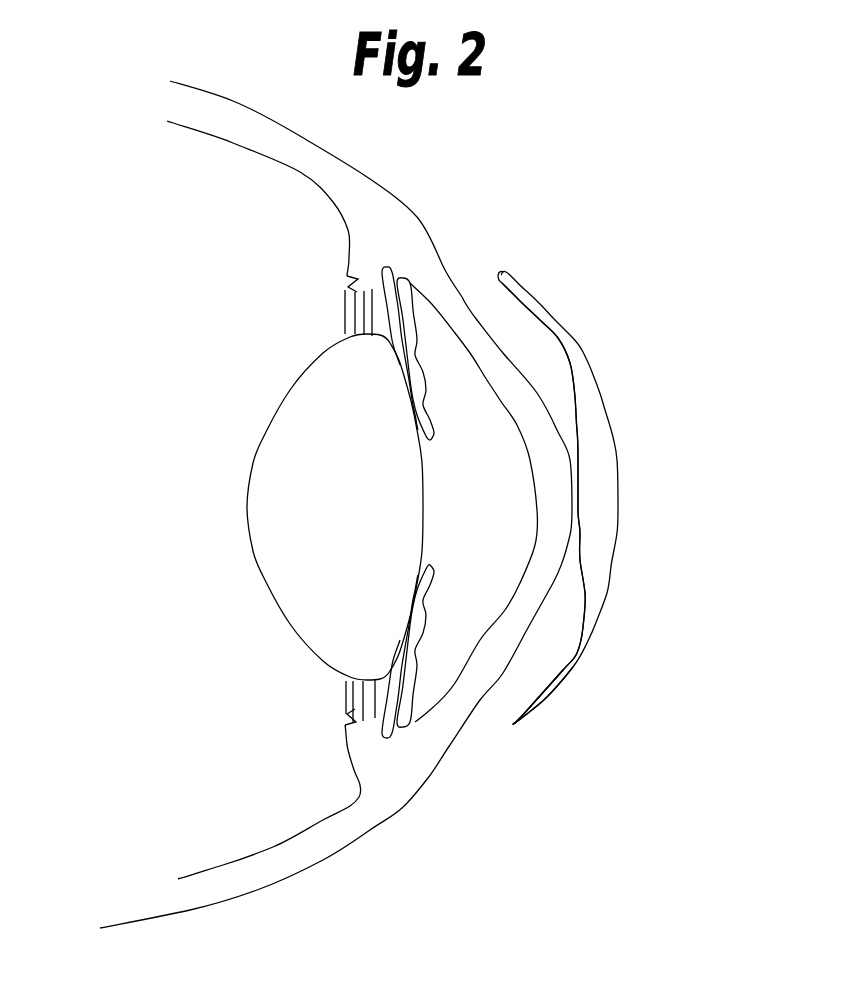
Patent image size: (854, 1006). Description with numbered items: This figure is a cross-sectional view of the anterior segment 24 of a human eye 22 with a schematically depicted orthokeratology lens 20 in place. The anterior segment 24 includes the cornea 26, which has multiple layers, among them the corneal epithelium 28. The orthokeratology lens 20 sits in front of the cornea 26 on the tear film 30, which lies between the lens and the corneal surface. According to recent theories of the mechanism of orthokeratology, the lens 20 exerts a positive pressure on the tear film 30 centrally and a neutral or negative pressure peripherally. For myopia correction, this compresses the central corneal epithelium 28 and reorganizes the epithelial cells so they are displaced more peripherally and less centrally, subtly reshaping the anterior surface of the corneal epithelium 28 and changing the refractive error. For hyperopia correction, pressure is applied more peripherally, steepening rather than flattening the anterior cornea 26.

The orthokeratology lens 20 is at (602, 613).
The eye 22 is at (428, 778).
The anterior segment 24 is at (402, 808).
The cornea 26 is at (448, 313).
The corneal epithelium 28 is at (502, 672).
The tear film 30 is at (533, 653).